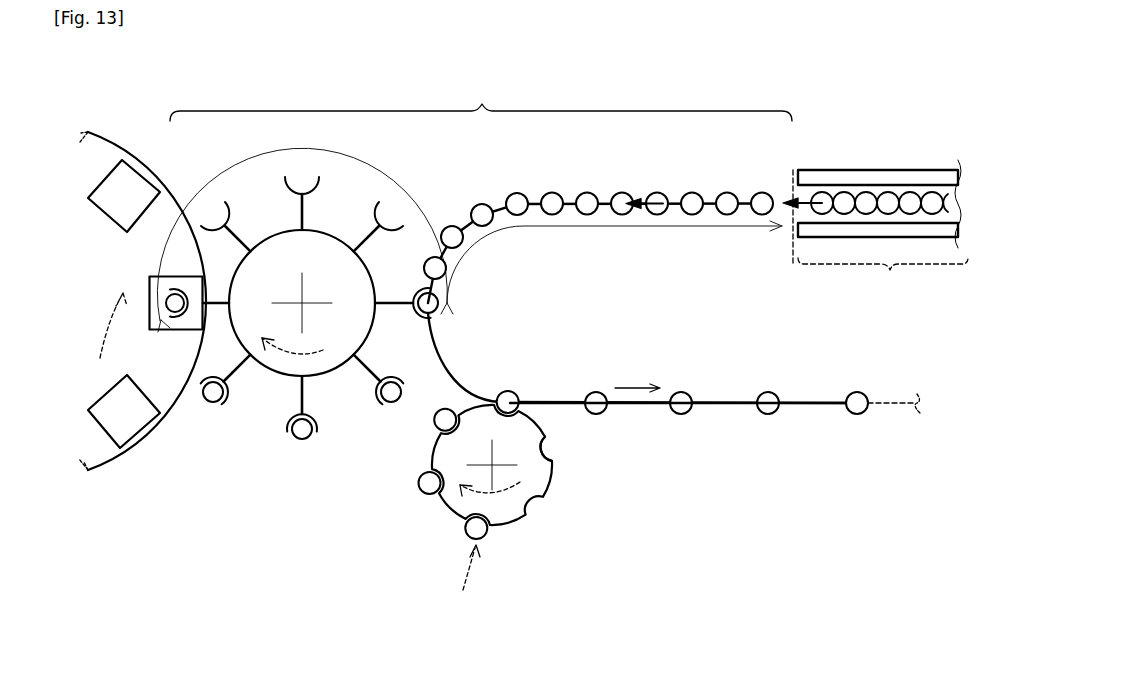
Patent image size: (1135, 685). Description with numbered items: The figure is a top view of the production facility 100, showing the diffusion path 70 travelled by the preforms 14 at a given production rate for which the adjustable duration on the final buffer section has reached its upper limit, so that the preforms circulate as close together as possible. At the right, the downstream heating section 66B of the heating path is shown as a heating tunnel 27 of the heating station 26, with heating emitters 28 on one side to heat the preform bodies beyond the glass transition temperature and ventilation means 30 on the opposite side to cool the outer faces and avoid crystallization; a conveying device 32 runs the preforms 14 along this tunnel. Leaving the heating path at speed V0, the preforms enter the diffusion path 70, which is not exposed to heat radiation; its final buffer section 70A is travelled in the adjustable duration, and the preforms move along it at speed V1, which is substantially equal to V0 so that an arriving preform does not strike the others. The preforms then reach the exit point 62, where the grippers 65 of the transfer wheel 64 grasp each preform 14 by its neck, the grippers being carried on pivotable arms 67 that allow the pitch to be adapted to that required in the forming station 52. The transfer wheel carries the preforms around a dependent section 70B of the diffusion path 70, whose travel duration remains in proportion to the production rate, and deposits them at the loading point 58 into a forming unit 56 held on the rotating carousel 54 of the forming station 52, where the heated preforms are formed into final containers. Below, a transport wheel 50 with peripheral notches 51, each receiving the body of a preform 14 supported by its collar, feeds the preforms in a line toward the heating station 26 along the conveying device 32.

The preform 14 is at (585, 198).
The heating station 26 is at (818, 447).
The heating tunnel 27 is at (893, 194).
The heating emitters 28 is at (838, 170).
The ventilation means 30 is at (843, 238).
The conveying device 32 is at (722, 410).
The transport wheel 50 is at (555, 458).
The notch 51 is at (548, 448).
The forming station 52 is at (196, 165).
The carousel 54 is at (95, 140).
The forming unit 56 is at (122, 190).
The loading point 58 is at (165, 295).
The exit point 62 is at (428, 320).
The transfer wheel 64 is at (354, 312).
The grippers 65 is at (385, 212).
The arms 67 is at (348, 243).
The diffusion path 70 is at (481, 99).
The final buffer section 70A is at (550, 230).
The dependent section 70B is at (310, 452).
The production facility 100 is at (652, 88).
The speed vector of preforms exiting the heating path V0 is at (795, 197).
The speed vector of preforms on the final buffer section V1 is at (655, 215).
The downstream heating section 66B is at (880, 232).